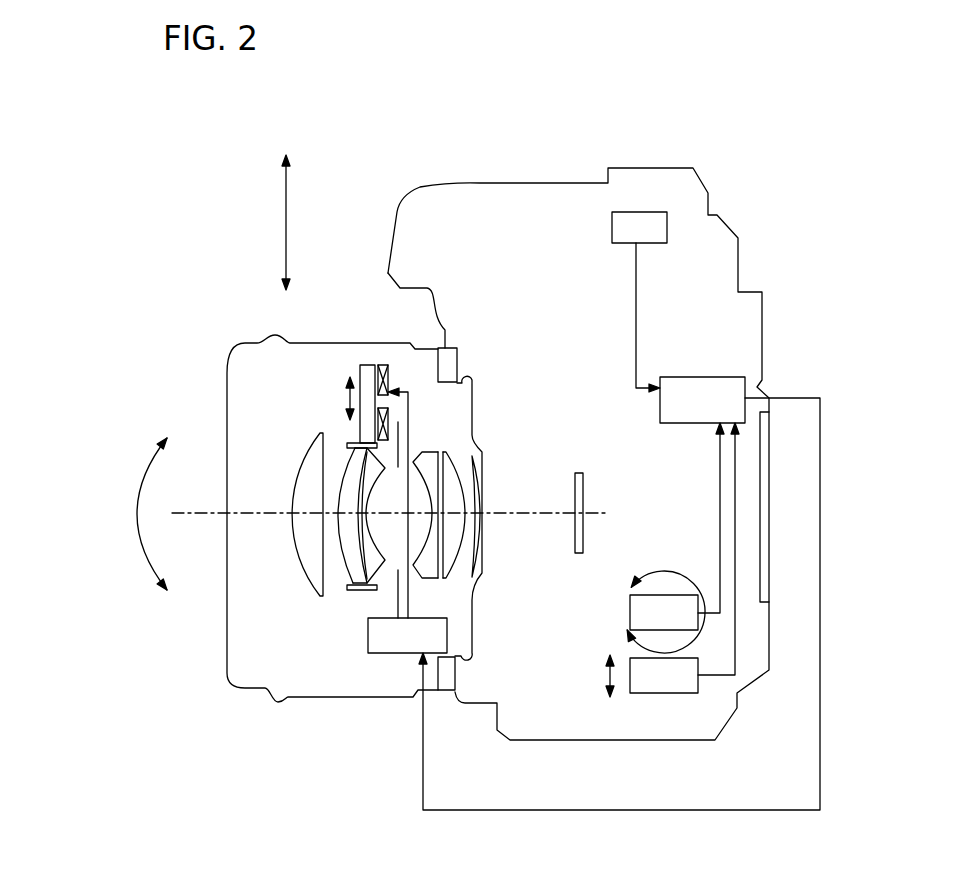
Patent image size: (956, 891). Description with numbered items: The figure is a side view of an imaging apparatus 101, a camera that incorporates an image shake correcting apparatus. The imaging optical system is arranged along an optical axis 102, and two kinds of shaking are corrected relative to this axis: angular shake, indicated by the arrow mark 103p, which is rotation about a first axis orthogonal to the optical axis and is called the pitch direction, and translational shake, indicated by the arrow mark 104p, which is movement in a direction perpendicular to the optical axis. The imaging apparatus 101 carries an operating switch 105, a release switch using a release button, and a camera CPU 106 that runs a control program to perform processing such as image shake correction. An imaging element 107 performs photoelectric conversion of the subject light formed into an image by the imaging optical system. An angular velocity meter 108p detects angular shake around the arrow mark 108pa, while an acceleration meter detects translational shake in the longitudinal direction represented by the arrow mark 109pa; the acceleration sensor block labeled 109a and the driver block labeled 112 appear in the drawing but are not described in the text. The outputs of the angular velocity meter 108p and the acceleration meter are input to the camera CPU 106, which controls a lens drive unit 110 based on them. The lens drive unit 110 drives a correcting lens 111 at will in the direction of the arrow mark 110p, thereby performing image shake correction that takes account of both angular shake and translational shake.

The imaging apparatus 101 is at (741, 247).
The optical axis 102 is at (192, 512).
The arrow mark (angular shake, pitch) 103p is at (137, 497).
The arrow mark (translational shake, pitch) 104p is at (283, 229).
The operating switch (release SW) 105 is at (620, 245).
The camera CPU 106 is at (712, 377).
The imaging element 107 is at (578, 473).
The angular velocity meter 108p is at (630, 612).
The arrow mark (angular shake detection direction) 108pa is at (670, 572).
The acceleration sensor 109a is at (643, 694).
The arrow mark (translational shake detection direction) 109pa is at (606, 677).
The lens drive unit 110 is at (358, 372).
The arrow mark (correcting lens drive direction) 110p is at (346, 400).
The correcting lens 111 is at (337, 493).
The driver 112 is at (367, 632).